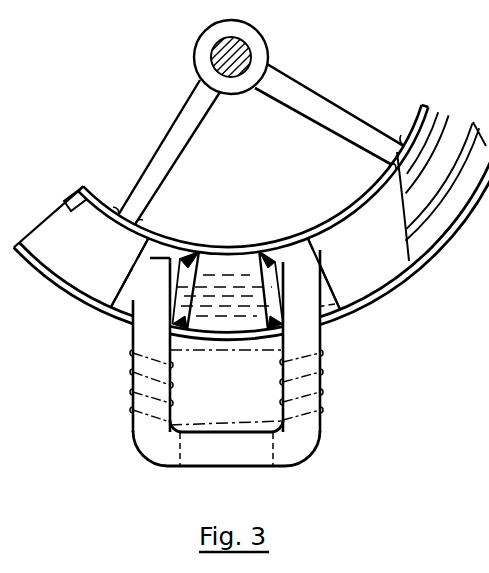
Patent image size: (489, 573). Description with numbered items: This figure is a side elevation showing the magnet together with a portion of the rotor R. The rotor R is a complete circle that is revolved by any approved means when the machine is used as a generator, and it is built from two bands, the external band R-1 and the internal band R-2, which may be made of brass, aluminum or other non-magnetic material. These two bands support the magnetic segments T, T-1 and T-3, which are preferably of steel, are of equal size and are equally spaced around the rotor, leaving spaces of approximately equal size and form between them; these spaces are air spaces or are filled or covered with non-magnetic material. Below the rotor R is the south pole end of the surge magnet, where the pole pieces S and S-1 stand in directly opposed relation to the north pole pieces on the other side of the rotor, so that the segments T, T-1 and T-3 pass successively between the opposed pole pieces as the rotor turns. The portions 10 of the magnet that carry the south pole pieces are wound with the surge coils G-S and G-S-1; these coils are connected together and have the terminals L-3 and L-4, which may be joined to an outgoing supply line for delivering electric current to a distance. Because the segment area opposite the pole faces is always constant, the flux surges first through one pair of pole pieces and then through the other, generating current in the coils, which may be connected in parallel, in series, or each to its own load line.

The rotor R is at (251, 222).
The external band R-1 is at (392, 291).
The internal band R-2 is at (335, 214).
The magnetic segment T is at (228, 290).
The magnetic segment T-1 is at (92, 211).
The magnetic segment T-3 is at (445, 176).
The south pole piece S is at (312, 275).
The south pole piece S-1 is at (125, 301).
The pole piece portion of magnet 10 is at (130, 335).
The surge coil G-S is at (306, 419).
The surge coil G-S-1 is at (146, 419).
The terminal L-3 is at (205, 352).
The terminal L-4 is at (203, 424).